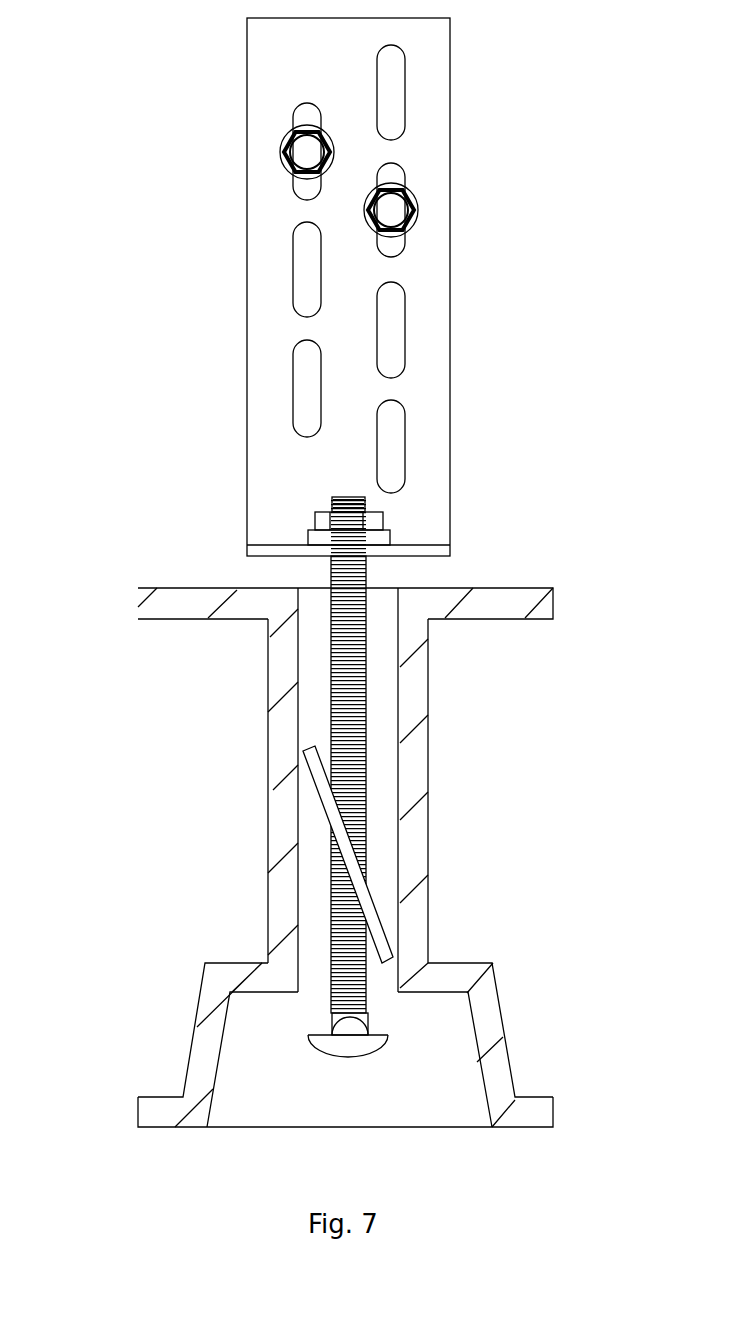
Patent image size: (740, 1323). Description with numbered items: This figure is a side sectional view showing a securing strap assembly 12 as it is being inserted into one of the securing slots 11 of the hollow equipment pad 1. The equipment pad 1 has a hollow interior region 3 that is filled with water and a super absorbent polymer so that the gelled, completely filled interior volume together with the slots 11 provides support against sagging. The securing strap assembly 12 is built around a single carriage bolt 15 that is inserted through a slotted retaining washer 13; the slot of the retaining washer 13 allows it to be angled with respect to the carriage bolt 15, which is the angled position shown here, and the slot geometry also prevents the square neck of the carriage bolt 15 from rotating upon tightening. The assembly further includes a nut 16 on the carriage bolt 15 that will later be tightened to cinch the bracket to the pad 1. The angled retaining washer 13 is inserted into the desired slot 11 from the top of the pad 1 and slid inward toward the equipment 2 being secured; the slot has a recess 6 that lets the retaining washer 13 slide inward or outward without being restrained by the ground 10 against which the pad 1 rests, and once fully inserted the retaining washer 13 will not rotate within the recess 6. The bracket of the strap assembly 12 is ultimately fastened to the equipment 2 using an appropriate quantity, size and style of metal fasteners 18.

The equipment pad 1 is at (500, 588).
The equipment 2 is at (505, 133).
The hollow interior region 3 is at (488, 680).
The recess 6 is at (225, 1047).
The ground 10 is at (405, 1143).
The securing slot 11 is at (400, 813).
The securing strap assembly 12 is at (247, 281).
The retaining washer 13 is at (330, 820).
The carriage bolt 15 is at (333, 682).
The nut 16 is at (310, 530).
The metal fasteners 18 is at (282, 162).